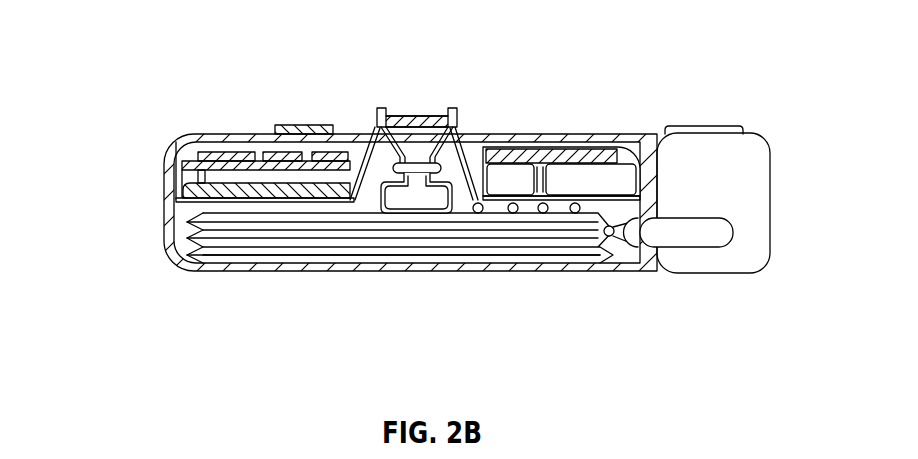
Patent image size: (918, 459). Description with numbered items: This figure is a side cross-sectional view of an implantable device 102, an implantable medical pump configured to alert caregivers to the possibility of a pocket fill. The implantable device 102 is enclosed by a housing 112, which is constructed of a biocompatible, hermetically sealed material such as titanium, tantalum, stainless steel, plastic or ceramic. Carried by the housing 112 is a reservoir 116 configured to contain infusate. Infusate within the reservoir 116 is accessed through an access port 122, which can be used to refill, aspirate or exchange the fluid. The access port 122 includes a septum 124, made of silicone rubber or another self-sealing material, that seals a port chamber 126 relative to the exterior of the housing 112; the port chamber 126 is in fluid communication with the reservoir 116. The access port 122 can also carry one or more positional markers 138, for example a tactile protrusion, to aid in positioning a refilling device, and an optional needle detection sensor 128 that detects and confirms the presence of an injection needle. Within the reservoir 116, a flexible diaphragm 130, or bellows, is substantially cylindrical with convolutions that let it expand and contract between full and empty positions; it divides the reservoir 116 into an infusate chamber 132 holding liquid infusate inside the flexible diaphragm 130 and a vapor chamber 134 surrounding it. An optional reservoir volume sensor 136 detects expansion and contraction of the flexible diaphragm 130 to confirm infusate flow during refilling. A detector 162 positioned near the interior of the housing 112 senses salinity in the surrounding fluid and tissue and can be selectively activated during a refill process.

The implantable device 102 is at (143, 110).
The housing 112 is at (231, 135).
The reservoir 116 is at (360, 240).
The access port 122 is at (410, 117).
The septum 124 is at (352, 143).
The port chamber 126 is at (407, 203).
The needle detection sensor 128 is at (469, 146).
The flexible diaphragm 130 is at (183, 240).
The infusate chamber 132 is at (293, 253).
The vapor chamber 134 is at (245, 203).
The reservoir volume sensor 136 is at (582, 172).
The positional marker 138 is at (382, 110).
The detector 162 is at (300, 125).